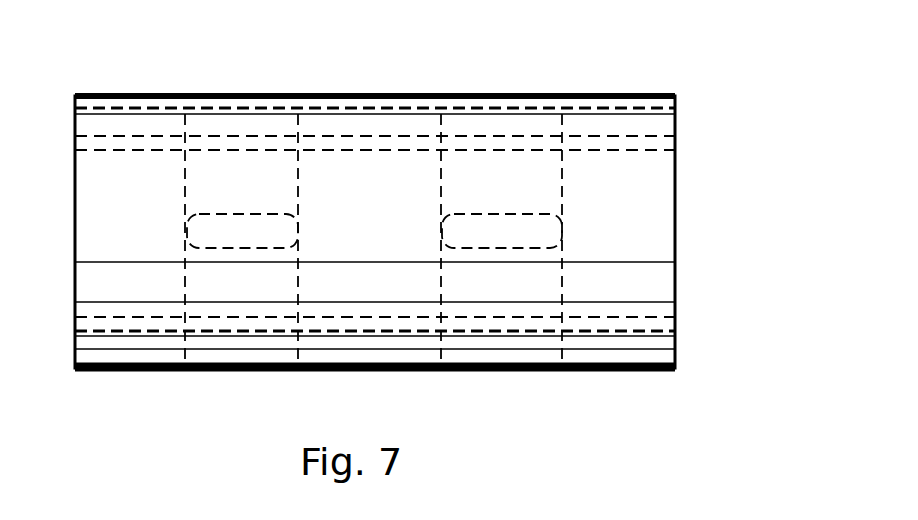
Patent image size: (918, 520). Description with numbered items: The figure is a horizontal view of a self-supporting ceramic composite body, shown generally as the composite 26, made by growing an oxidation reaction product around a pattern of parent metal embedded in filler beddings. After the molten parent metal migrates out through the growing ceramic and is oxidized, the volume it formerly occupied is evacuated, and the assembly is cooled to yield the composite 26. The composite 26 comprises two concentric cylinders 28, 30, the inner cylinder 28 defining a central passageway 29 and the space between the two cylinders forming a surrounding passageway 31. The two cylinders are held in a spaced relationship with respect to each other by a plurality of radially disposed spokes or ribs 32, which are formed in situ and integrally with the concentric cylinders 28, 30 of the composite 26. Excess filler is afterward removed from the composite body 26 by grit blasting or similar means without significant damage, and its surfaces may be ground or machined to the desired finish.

The ceramic composite 26 is at (340, 70).
The concentric cylinder 28 is at (665, 150).
The central passageway 29 is at (608, 150).
The concentric cylinder 30 is at (670, 94).
The surrounding passageway 31 is at (665, 120).
The spokes or ribs 32 is at (216, 228).